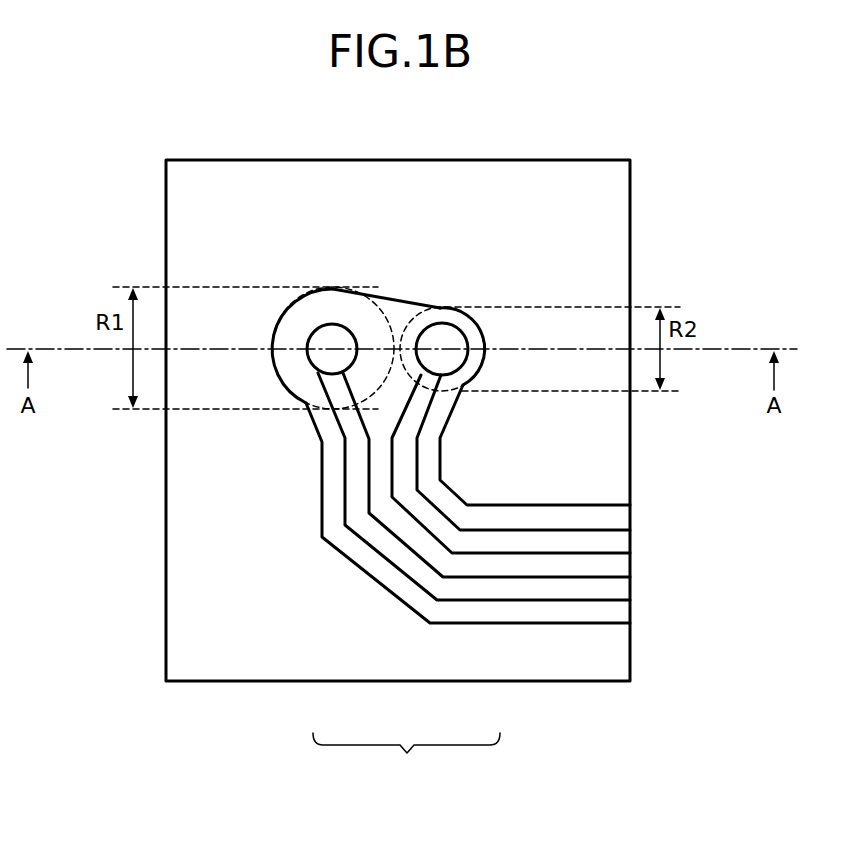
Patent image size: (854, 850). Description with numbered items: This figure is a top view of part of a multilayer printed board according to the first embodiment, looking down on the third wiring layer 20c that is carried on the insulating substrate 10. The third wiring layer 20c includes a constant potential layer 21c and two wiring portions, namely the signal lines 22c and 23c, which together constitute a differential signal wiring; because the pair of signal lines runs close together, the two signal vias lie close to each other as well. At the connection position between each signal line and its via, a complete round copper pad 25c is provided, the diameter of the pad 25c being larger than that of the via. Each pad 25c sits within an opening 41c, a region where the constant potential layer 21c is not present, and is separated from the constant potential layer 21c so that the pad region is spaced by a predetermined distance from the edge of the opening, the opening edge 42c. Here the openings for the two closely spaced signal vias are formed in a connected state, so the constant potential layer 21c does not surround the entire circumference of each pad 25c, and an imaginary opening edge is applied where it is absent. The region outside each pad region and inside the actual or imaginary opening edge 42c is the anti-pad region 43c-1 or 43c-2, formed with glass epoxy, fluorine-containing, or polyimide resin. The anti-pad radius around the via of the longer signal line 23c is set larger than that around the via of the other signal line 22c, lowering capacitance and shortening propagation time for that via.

The insulating substrate 10 is at (217, 683).
The third wiring layer 20c is at (406, 760).
The constant potential layer 21c is at (342, 663).
The signal line 22c is at (485, 540).
The signal line 23c is at (407, 560).
The pad 25c is at (447, 363).
The opening 41c is at (397, 316).
The opening edge 42c is at (467, 327).
The anti-pad region 43c-1 is at (473, 357).
The anti-pad region 43c-2 is at (293, 373).